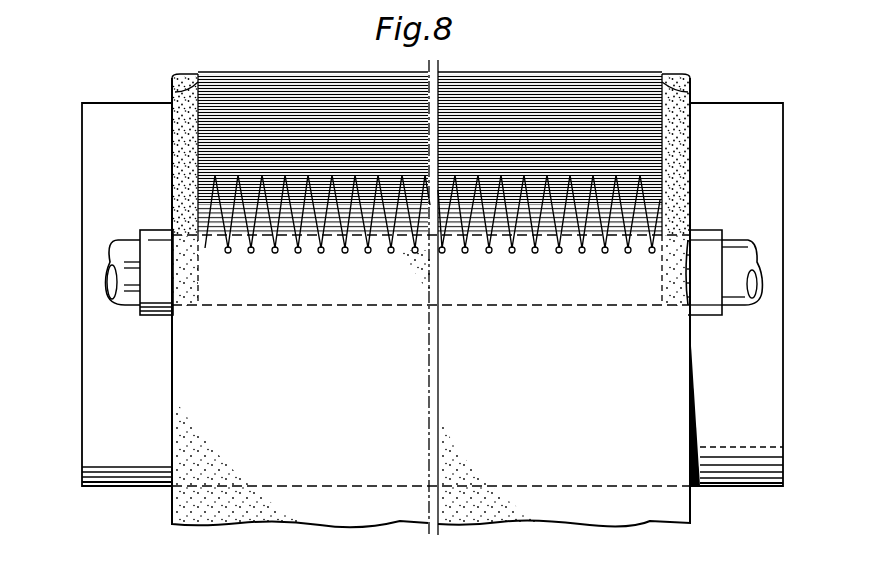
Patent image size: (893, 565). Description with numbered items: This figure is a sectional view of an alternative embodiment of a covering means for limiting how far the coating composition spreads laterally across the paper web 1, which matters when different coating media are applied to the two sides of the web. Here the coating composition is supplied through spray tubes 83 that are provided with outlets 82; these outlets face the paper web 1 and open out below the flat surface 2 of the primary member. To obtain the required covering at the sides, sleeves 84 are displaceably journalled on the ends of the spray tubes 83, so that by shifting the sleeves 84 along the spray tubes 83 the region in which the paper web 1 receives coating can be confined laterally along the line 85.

The paper web 1 is at (660, 515).
The flat surface 2 is at (762, 146).
The outlets 82 is at (652, 250).
The spray tubes 83 is at (733, 258).
The sleeves 84 is at (149, 232).
The line 85 is at (182, 88).